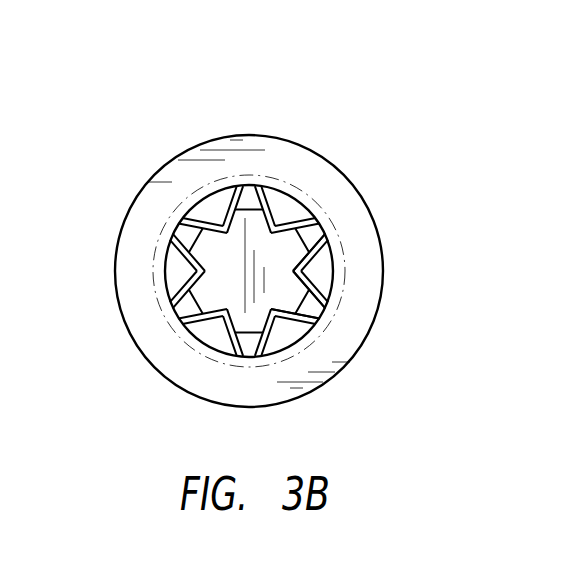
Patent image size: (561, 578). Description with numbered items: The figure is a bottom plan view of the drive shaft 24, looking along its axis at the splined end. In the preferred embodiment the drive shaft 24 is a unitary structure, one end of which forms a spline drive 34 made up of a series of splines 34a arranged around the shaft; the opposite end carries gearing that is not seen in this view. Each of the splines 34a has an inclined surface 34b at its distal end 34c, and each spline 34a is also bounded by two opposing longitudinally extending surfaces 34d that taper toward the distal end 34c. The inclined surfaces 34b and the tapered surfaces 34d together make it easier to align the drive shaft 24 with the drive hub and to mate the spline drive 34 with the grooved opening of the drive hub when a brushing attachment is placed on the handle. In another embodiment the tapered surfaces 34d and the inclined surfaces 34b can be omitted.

The drive shaft 24 is at (246, 232).
The spline drive 34 is at (142, 273).
The splines 34a is at (275, 186).
The inclined surface 34b is at (313, 233).
The distal end 34c is at (248, 356).
The longitudinally extending surfaces 34d is at (313, 300).